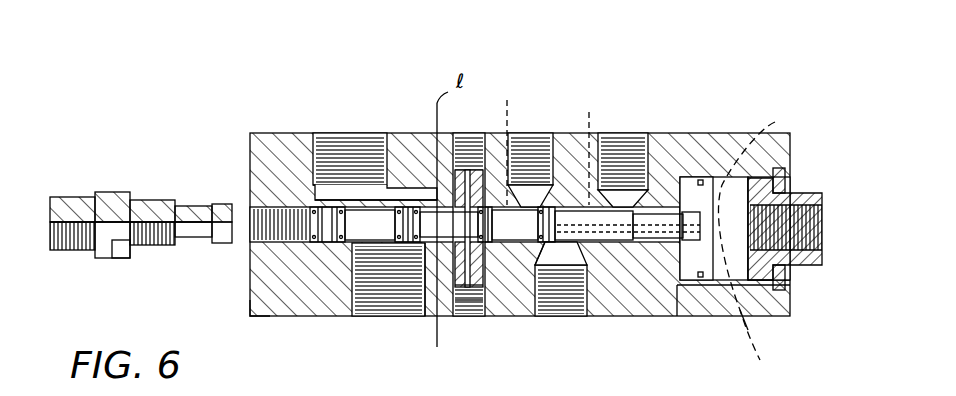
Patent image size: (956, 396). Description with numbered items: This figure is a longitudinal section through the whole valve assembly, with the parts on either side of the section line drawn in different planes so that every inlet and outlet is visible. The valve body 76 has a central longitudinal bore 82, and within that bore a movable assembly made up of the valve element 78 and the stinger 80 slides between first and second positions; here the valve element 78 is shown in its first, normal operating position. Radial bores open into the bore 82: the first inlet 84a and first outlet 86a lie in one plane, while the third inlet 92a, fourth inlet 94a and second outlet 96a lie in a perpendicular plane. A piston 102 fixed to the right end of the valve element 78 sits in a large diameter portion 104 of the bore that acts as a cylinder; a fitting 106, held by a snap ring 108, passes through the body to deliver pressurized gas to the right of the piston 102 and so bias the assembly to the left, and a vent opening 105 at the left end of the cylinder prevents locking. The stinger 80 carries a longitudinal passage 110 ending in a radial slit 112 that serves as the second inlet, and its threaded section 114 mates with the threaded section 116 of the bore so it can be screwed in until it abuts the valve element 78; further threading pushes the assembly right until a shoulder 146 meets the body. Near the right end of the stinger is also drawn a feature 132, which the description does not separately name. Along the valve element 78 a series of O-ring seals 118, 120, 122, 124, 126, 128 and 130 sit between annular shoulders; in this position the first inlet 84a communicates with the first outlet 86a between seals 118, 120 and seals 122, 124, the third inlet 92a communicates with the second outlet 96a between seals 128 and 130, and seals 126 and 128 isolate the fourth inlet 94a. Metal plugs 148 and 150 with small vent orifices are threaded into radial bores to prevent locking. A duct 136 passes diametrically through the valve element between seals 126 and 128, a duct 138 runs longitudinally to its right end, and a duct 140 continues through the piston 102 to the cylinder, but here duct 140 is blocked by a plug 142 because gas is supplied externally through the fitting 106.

The valve body 76 is at (252, 132).
The valve element 78 is at (620, 240).
The stinger 80 is at (112, 192).
The central longitudinal bore 82 is at (357, 243).
The first inlet 84a is at (386, 256).
The first outlet 86a is at (347, 184).
The third inlet 92a is at (628, 180).
The fourth inlet 94a is at (533, 178).
The second outlet 96a is at (565, 262).
The piston 102 is at (688, 192).
The large diameter portion of the bore 104 is at (740, 288).
The vent opening 105 is at (681, 316).
The fitting 106 is at (800, 196).
The snap ring 108 is at (790, 170).
The longitudinal passage 110 is at (113, 224).
The radial slit 112 is at (229, 204).
The threaded section of the stinger 114 is at (147, 199).
The threaded section of the bore 116 is at (271, 203).
The O-ring seal 118 is at (330, 243).
The O-ring seal 120 is at (255, 313).
The O-ring seal 122 is at (398, 199).
The O-ring seal 124 is at (426, 318).
The O-ring seal 126 is at (487, 312).
The O-ring seal 128 is at (545, 248).
The O-ring seal 130 is at (684, 178).
The groove 132 is at (212, 207).
The duct 136 is at (531, 143).
The duct 138 is at (610, 150).
The duct 140 is at (759, 231).
The plug 142 is at (764, 342).
The shoulder 146 is at (133, 254).
The metal plug 148 is at (462, 170).
The metal plug 150 is at (466, 318).